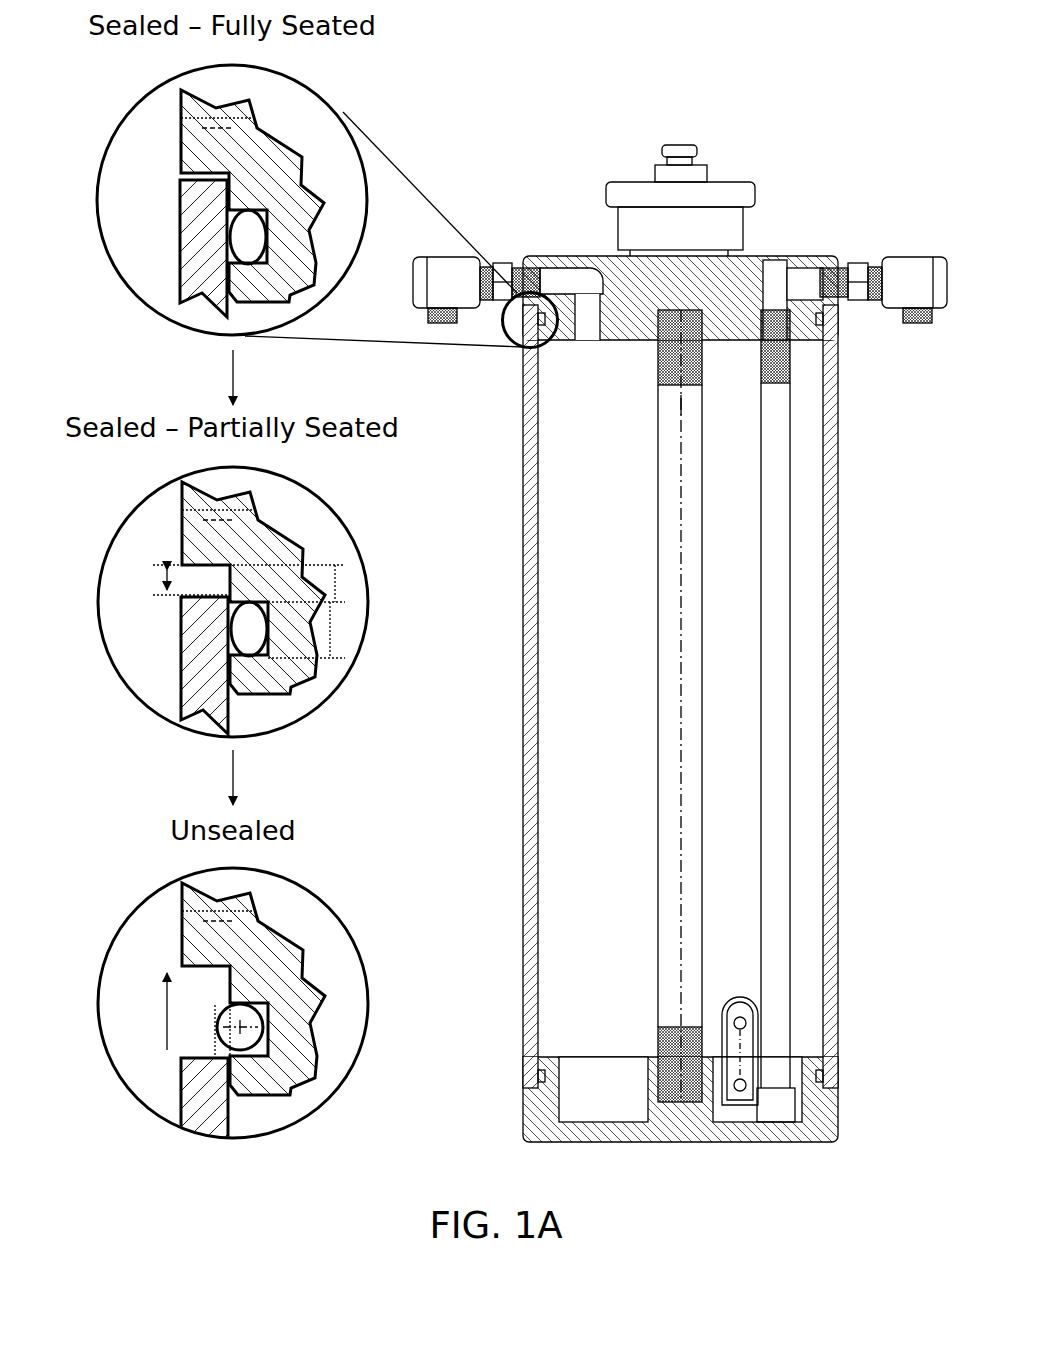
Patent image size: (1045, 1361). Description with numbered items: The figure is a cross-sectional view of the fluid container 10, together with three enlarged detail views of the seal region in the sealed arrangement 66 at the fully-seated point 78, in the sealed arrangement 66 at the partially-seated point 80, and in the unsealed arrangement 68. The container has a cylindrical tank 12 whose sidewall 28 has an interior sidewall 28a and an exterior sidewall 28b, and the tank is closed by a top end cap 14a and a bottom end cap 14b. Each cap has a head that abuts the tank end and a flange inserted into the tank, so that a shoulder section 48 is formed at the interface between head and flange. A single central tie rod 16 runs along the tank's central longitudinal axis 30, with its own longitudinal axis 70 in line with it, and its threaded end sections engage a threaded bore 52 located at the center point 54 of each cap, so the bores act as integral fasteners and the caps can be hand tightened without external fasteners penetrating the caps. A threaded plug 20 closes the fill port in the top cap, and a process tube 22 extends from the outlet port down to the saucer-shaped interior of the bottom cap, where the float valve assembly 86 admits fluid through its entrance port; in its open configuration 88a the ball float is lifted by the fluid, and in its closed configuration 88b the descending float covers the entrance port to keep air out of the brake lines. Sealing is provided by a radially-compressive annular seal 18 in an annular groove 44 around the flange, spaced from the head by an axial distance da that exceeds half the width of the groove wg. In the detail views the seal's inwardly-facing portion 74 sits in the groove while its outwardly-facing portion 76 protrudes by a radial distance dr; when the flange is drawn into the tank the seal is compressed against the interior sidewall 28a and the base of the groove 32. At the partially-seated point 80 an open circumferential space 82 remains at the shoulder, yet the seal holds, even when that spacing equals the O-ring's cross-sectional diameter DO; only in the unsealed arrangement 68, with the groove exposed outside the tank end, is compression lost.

The fluid container 10 is at (880, 143).
The cylindrical tank 12 is at (828, 508).
The top end cap 14a is at (755, 255).
The bottom end cap 14b is at (822, 1133).
The central tie rod 16 is at (673, 677).
The radially-compressive annular seal 18 is at (822, 320).
The threaded plug 20 is at (723, 188).
The process tube 22 is at (775, 677).
The tank sidewall 28 is at (837, 753).
The interior sidewall 28a is at (240, 300).
The exterior sidewall 28b is at (230, 180).
The central longitudinal axis 30 is at (681, 405).
The base of the groove 32 is at (250, 243).
The annular groove 44 is at (818, 327).
The shoulder section 48 is at (825, 312).
The threaded bore 52 is at (660, 320).
The center point 54 is at (680, 303).
The sealed arrangement 66 is at (133, 107).
The unsealed arrangement 68 is at (133, 903).
The longitudinal axis of the tie rod 70 is at (682, 743).
The inwardly-facing portion 74 is at (268, 1002).
The outwardly-facing portion 76 is at (227, 1007).
The fully-seated point 78 is at (230, 175).
The partially-seated point 80 is at (230, 567).
The open circumferential space 82 is at (210, 582).
The float valve assembly 86 is at (768, 1093).
The open configuration 88a is at (738, 1023).
The closed configuration 88b is at (740, 1087).
The axial distance da is at (335, 582).
The width of the groove wg is at (330, 630).
The cross-sectional diameter of the O-ring DO is at (225, 1035).
The radial distance dr is at (222, 1010).